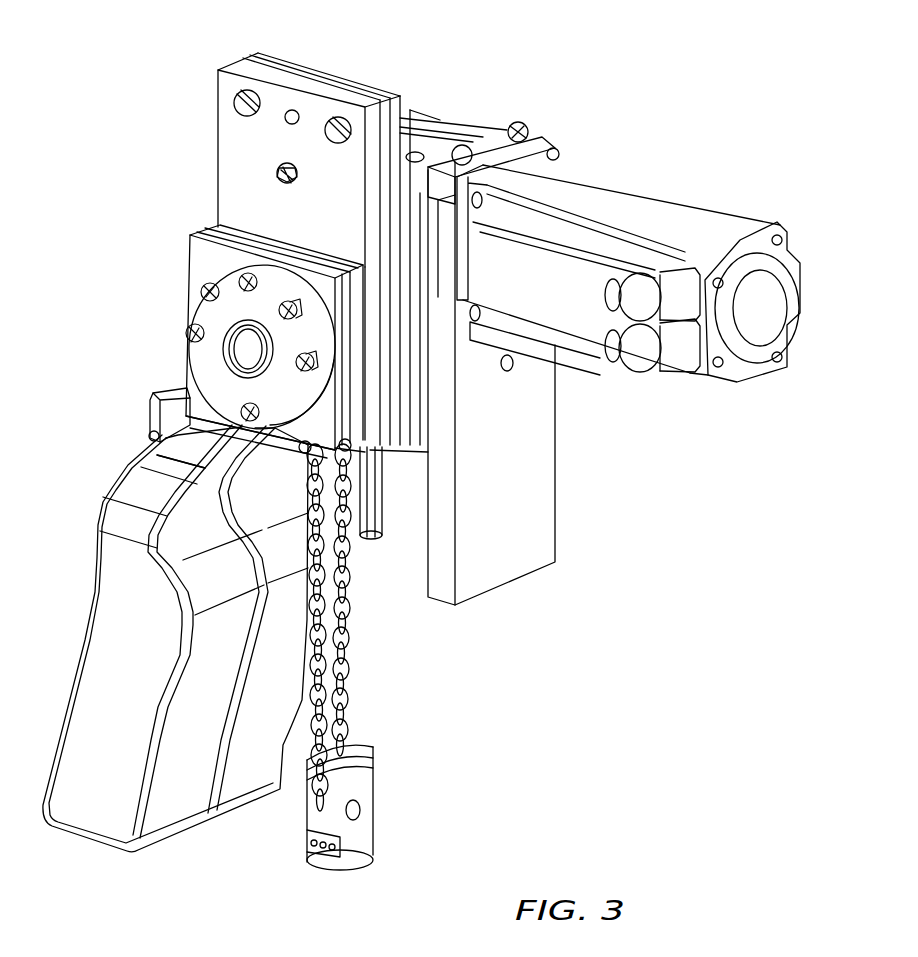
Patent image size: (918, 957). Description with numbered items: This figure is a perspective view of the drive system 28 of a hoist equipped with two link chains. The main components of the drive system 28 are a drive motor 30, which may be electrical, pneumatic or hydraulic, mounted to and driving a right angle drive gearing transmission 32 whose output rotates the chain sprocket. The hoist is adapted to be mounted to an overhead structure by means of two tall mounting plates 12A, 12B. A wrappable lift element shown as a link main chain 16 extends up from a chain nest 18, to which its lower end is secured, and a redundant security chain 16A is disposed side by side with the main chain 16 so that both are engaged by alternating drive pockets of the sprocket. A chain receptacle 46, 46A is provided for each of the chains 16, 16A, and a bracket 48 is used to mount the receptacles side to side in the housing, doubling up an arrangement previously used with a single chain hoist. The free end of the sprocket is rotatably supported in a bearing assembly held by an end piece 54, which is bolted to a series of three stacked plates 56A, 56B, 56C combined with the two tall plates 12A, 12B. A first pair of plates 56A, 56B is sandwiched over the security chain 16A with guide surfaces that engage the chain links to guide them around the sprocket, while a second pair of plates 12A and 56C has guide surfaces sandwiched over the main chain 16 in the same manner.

The mounting plate 12A is at (240, 66).
The mounting plate 12B is at (288, 66).
The transmission 32 is at (440, 121).
The drive motor 30 is at (658, 184).
The drive system 28 is at (108, 272).
The stacked plate 56A is at (205, 258).
The stacked plate 56B is at (220, 218).
The stacked plate 56C is at (399, 442).
The end piece 54 is at (207, 318).
The bracket 48 is at (163, 405).
The chain receptacle 46 is at (175, 670).
The chain receptacle 46A is at (125, 785).
The main chain 16 is at (335, 660).
The security chain 16A is at (307, 745).
The chain nest 18 is at (368, 815).